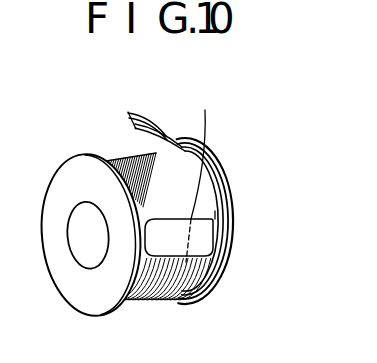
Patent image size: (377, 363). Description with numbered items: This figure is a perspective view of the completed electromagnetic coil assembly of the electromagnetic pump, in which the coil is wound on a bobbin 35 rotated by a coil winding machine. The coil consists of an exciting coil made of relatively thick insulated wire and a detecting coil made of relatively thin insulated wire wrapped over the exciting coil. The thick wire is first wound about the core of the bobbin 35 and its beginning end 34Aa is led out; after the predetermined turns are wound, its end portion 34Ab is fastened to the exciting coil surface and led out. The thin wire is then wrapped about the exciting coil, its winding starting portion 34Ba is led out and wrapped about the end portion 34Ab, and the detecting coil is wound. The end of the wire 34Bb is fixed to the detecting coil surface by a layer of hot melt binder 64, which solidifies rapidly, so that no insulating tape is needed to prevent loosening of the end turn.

The bobbin 35 is at (67, 177).
The beginning end of the exciting coil wire 34Aa is at (165, 150).
The end portion of the exciting coil wire 34Ab is at (162, 131).
The winding starting portion of the detecting coil wire 34Ba is at (170, 142).
The end of the detecting coil wire 34Bb is at (195, 186).
The hot melt binder 64 is at (203, 235).